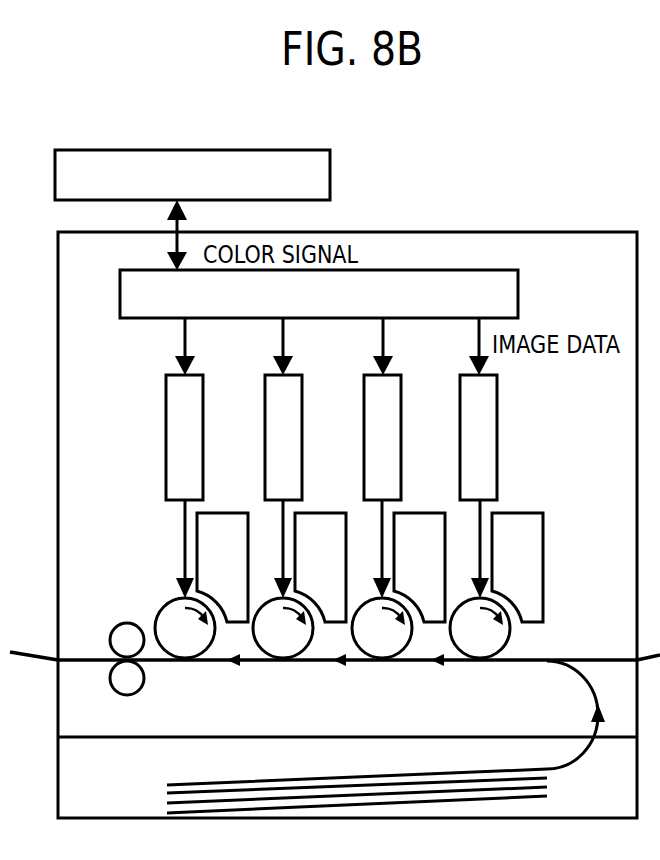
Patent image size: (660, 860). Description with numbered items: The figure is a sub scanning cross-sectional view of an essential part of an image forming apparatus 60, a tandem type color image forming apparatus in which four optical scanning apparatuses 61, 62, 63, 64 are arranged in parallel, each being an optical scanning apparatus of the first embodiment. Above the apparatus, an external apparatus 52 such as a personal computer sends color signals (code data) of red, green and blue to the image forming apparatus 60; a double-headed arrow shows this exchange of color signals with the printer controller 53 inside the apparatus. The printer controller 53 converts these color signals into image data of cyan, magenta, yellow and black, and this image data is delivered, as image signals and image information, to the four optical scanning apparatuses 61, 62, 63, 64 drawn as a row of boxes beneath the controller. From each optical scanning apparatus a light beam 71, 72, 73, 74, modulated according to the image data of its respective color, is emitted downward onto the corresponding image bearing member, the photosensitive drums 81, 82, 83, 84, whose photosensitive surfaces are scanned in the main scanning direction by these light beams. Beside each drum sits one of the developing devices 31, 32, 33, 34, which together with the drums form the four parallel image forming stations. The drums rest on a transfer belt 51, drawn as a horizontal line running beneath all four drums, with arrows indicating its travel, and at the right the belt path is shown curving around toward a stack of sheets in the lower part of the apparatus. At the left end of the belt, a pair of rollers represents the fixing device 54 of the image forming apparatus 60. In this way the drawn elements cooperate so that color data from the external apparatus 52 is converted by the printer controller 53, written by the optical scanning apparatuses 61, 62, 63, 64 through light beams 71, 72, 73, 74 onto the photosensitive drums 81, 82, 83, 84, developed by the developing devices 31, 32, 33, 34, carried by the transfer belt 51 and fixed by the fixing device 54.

The image forming apparatus 60 is at (503, 232).
The external apparatus 52 is at (332, 172).
The printer controller 53 is at (520, 292).
The optical scanning apparatus 61 is at (175, 405).
The optical scanning apparatus 62 is at (273, 405).
The optical scanning apparatus 63 is at (373, 405).
The optical scanning apparatus 64 is at (470, 405).
The light beam 71 is at (183, 560).
The light beam 72 is at (281, 560).
The light beam 73 is at (380, 560).
The light beam 74 is at (478, 560).
The developing device 31 is at (228, 520).
The developing device 32 is at (326, 520).
The developing device 33 is at (425, 520).
The developing device 34 is at (523, 520).
The photosensitive drum 81 is at (189, 650).
The photosensitive drum 82 is at (287, 650).
The photosensitive drum 83 is at (386, 650).
The photosensitive drum 84 is at (484, 650).
The fixing device 54 is at (130, 638).
The transfer belt 51 is at (587, 688).